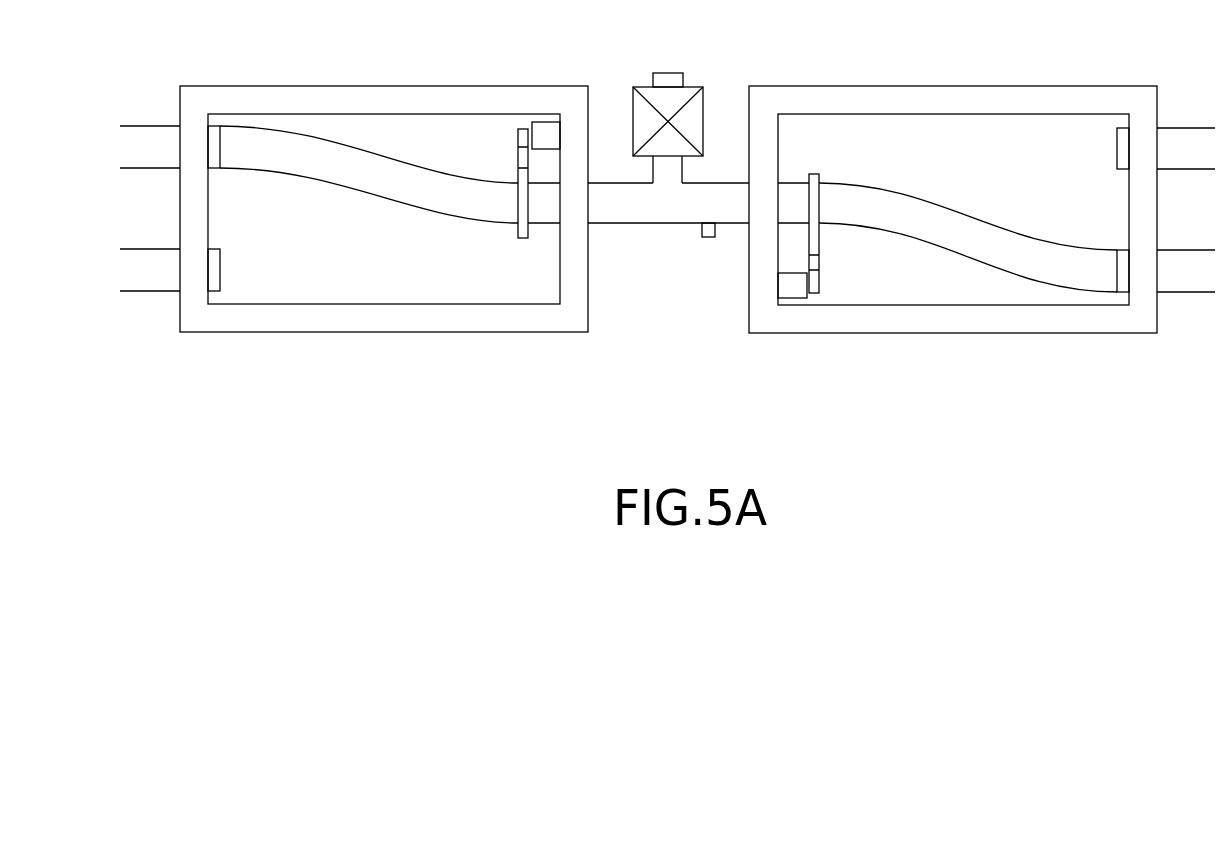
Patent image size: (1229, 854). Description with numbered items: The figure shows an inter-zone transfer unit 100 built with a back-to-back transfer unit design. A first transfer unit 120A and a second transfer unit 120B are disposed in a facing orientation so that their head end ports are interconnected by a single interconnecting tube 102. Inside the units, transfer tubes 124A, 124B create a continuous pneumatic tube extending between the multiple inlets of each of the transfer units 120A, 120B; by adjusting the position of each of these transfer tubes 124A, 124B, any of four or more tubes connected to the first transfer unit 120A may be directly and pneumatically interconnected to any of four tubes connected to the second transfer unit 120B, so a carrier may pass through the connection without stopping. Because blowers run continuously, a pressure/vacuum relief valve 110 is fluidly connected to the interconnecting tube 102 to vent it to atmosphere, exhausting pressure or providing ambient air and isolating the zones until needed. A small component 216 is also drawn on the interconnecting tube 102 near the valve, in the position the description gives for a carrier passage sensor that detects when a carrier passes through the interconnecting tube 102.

The inter-zone transfer unit 100 is at (655, 375).
The interconnecting tube 102 is at (648, 226).
The pressure/vacuum relief valve 110 is at (680, 104).
The first transfer unit 120A is at (295, 318).
The second transfer unit 120B is at (918, 334).
The transfer tube 124A is at (393, 187).
The transfer tube 124B is at (930, 218).
The sensor 216 is at (709, 240).